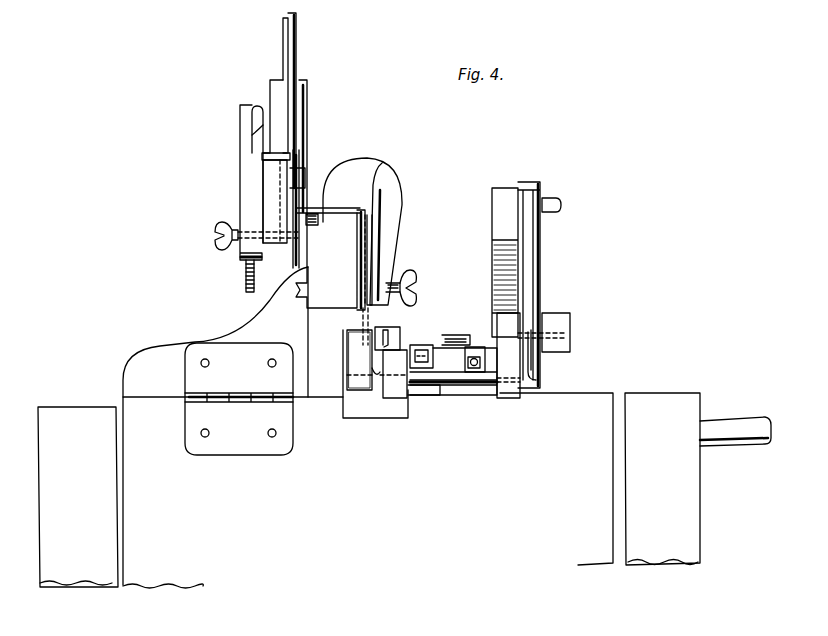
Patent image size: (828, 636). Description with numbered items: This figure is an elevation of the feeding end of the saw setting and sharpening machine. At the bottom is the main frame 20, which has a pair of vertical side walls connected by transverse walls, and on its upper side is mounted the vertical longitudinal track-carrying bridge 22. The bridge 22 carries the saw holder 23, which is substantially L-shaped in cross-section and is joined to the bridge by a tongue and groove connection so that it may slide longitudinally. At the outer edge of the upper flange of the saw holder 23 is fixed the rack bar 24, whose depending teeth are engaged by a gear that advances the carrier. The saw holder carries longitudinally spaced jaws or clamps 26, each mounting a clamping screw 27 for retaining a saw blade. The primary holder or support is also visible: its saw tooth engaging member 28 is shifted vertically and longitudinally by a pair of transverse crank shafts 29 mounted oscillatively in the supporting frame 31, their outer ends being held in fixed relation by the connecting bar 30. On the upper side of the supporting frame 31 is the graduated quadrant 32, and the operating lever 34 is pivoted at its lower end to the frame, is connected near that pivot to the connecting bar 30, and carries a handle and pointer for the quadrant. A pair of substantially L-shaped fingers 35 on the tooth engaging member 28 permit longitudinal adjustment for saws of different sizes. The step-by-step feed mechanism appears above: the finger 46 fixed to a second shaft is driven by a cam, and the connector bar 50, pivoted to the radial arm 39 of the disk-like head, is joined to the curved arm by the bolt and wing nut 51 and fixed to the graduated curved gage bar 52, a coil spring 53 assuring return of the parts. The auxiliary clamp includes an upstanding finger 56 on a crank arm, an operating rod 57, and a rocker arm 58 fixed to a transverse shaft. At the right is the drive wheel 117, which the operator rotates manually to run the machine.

The main frame 20 is at (599, 393).
The bridge 22 is at (314, 304).
The saw holder 23 is at (407, 255).
The rack bar 24 is at (313, 213).
The jaws or clamps 26 is at (390, 208).
The clamping screw 27 is at (413, 284).
The saw tooth engaging member 28 is at (347, 375).
The transverse crank shafts 29 is at (455, 392).
The connecting bar 30 is at (570, 323).
The supporting frame 31 is at (509, 394).
The quadrant 32 is at (512, 232).
The operating lever 34 is at (533, 275).
The L-shaped fingers 35 is at (352, 343).
The radial arm 39 is at (280, 88).
The finger 46 is at (275, 193).
The connector bar 50 is at (240, 129).
The bolt and wing nut 51 is at (216, 236).
The curved gage bar 52 is at (286, 52).
The coil spring 53 is at (246, 280).
The upstanding finger 56 is at (398, 331).
The operating rod 57 is at (428, 350).
The rocker arm 58 is at (423, 395).
The drive wheel 117 is at (700, 508).